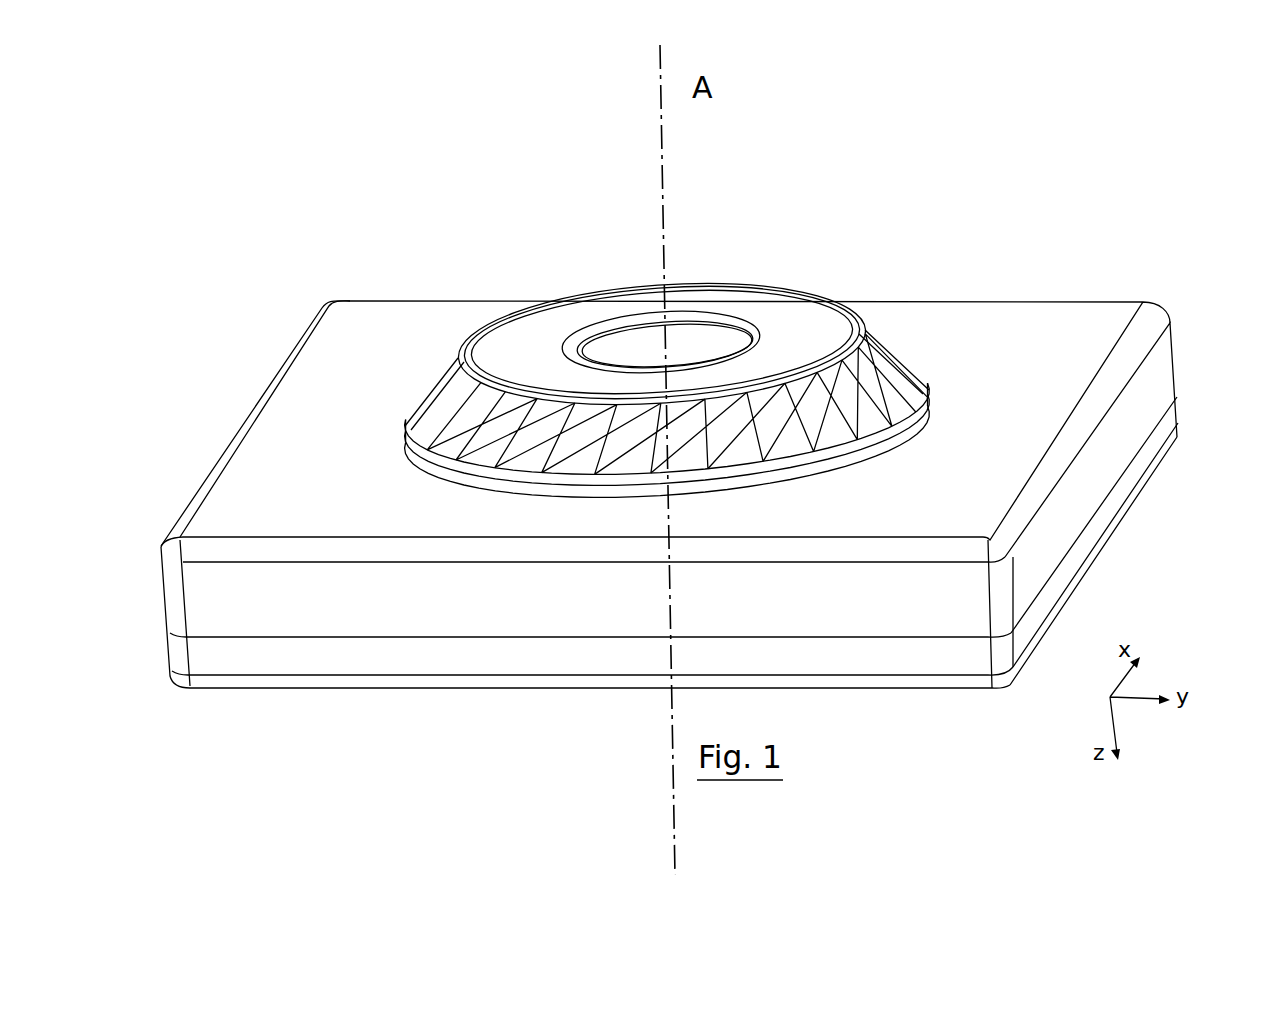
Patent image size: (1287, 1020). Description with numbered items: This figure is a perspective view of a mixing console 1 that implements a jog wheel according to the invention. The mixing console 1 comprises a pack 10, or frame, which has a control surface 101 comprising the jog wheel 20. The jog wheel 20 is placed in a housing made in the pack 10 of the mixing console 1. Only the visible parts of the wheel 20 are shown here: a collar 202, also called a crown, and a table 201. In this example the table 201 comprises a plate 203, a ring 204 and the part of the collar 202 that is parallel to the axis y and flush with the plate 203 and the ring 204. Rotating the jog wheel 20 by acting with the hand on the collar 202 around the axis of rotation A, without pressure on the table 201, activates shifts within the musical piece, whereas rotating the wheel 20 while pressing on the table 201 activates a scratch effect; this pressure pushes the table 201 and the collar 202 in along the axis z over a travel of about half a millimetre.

The mixing console 1 is at (443, 707).
The pack 10 is at (1077, 552).
The control surface 101 is at (350, 342).
The jog wheel 20 is at (745, 277).
The table 201 is at (558, 327).
The collar 202 is at (441, 397).
The plate 203 is at (642, 303).
The ring 204 is at (852, 330).